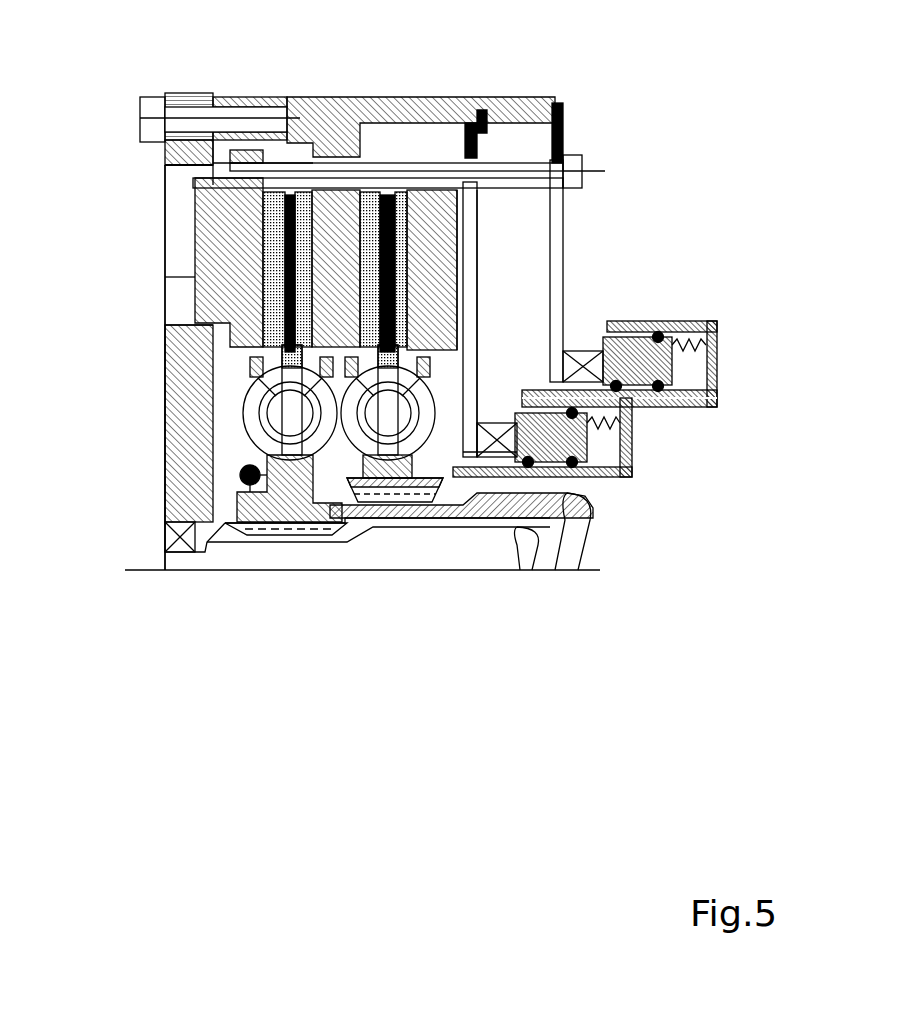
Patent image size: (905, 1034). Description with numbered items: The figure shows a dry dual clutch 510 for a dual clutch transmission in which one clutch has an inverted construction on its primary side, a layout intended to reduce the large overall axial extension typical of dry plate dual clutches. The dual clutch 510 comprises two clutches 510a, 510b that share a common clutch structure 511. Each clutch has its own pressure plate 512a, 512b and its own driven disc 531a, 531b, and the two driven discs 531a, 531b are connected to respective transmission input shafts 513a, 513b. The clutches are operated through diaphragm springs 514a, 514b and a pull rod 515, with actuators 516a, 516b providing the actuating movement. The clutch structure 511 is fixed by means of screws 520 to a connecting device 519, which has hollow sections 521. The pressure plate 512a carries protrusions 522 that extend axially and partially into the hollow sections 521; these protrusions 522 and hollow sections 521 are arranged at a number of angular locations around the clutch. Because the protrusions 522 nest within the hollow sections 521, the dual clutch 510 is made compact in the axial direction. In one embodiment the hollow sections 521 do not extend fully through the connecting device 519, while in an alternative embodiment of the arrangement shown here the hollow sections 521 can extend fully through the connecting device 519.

The dry dual clutch 510 is at (660, 90).
The clutch 510a is at (335, 80).
The clutch 510b is at (465, 80).
The clutch structure 511 is at (340, 100).
The pressure plate 512a is at (193, 240).
The pressure plate 512b is at (478, 258).
The transmission input shaft 513a is at (500, 557).
The transmission input shaft 513b is at (553, 500).
The diaphragm spring 514a is at (540, 192).
The diaphragm spring 514b is at (480, 200).
The pull rod 515 is at (563, 143).
The actuator 516a is at (713, 418).
The actuator 516b is at (643, 487).
The connecting device 519 is at (163, 155).
The screws 520 is at (152, 112).
The hollow sections 521 is at (183, 215).
The protrusions 522 is at (163, 278).
The driven disc 531a is at (478, 272).
The driven disc 531b is at (478, 322).